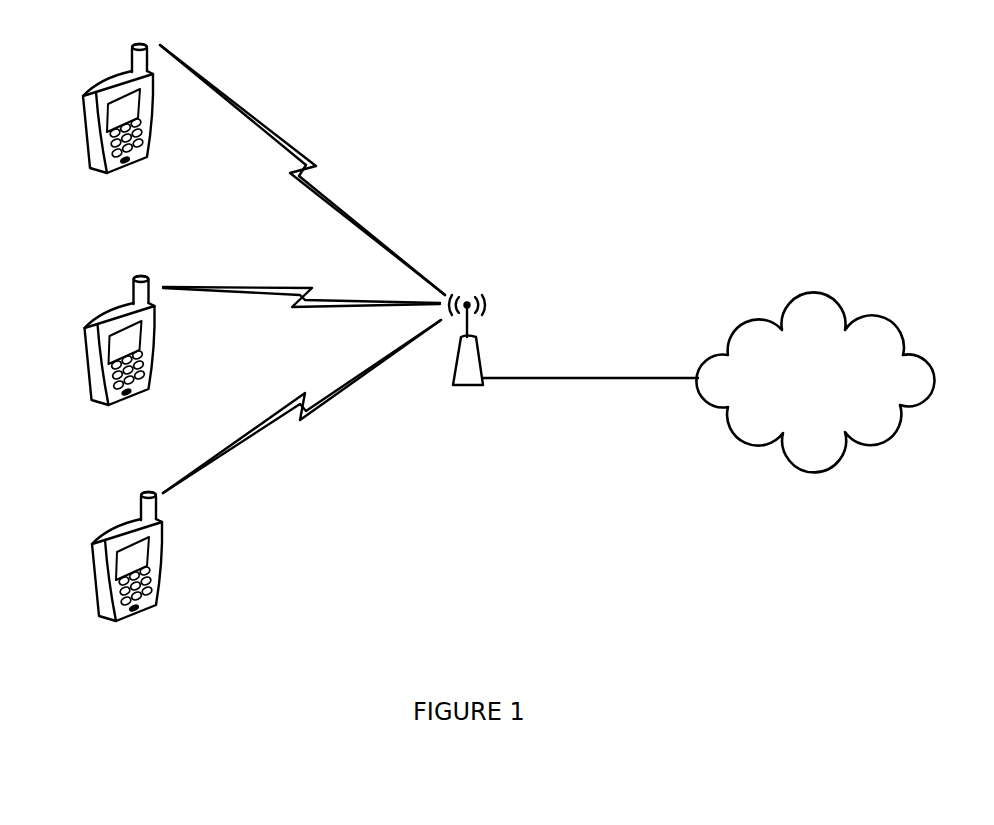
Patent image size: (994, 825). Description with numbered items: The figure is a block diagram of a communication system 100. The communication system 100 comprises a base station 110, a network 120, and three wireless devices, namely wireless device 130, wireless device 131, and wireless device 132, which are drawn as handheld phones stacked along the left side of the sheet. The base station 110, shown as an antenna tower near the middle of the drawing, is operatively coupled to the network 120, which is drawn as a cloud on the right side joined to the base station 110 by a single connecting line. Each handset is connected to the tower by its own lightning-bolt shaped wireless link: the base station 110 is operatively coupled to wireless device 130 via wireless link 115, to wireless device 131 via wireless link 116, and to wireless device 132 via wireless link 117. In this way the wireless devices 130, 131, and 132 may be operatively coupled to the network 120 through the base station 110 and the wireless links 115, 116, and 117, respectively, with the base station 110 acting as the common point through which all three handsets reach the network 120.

The communication system 100 is at (798, 51).
The base station 110 is at (471, 388).
The wireless link 115 is at (297, 152).
The wireless link 116 is at (262, 287).
The wireless link 117 is at (309, 416).
The network 120 is at (792, 406).
The wireless device 130 is at (108, 175).
The wireless device 131 is at (110, 408).
The wireless device 132 is at (118, 625).